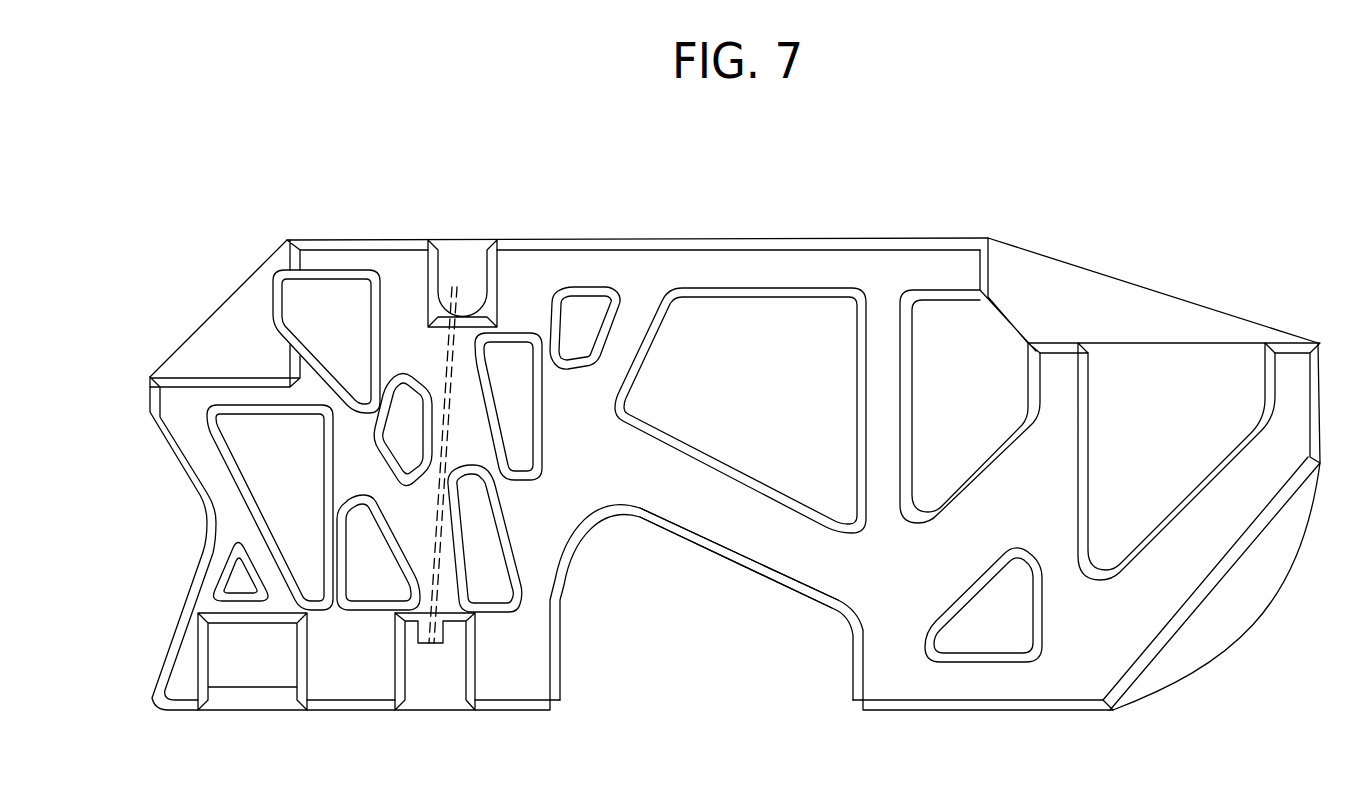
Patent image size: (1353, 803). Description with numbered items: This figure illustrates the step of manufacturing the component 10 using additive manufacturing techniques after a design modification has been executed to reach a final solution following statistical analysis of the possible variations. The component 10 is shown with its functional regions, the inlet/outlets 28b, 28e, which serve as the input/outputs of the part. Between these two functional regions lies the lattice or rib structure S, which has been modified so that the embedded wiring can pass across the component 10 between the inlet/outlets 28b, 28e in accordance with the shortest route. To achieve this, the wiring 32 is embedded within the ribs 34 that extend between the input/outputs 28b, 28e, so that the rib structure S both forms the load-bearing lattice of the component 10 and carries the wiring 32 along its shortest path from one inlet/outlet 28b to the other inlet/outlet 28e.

The component 10 is at (963, 213).
The inlet/outlet 28b is at (457, 257).
The inlet/outlet 28e is at (427, 680).
The wiring 32 is at (447, 362).
The ribs 34 is at (460, 417).
The lattice or rib structure S is at (837, 570).